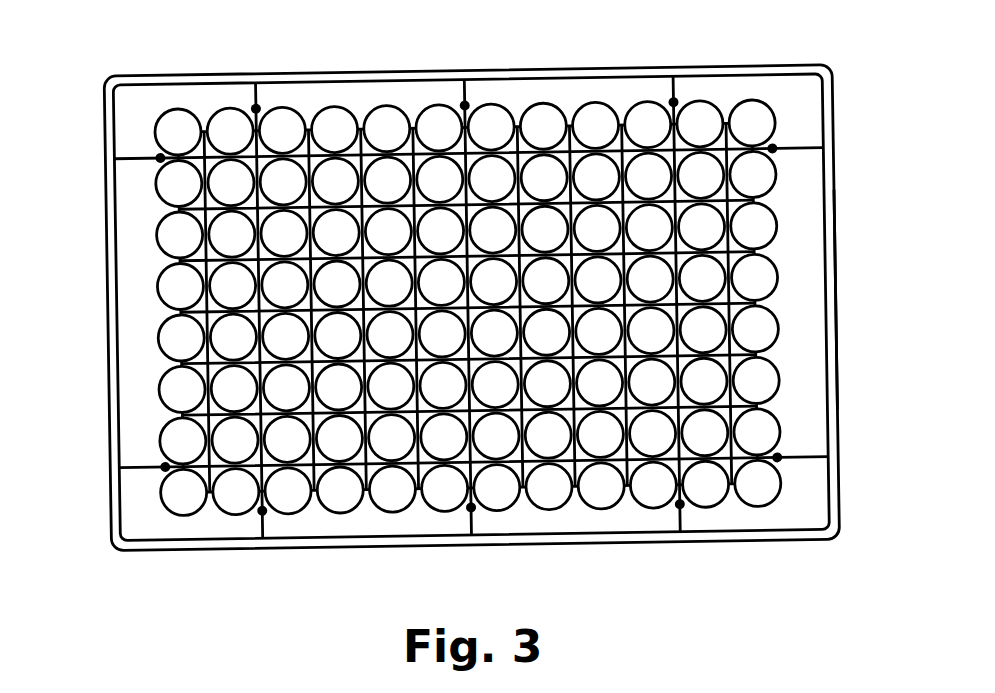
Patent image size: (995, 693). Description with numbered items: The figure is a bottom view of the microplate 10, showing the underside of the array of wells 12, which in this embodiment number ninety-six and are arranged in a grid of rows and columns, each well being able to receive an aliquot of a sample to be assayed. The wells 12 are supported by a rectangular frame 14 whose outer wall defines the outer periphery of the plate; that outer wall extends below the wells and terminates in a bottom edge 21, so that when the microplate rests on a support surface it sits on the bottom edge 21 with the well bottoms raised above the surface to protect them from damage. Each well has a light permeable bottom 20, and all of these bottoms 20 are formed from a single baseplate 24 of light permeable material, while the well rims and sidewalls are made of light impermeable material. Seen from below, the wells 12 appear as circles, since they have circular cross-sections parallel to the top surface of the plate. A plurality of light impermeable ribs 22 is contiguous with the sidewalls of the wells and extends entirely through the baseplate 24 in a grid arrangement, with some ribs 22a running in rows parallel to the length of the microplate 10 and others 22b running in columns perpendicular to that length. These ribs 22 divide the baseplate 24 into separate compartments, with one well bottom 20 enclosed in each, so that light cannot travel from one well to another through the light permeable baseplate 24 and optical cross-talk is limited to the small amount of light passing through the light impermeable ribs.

The microplate 10 is at (104, 222).
The wells 12 is at (647, 497).
The frame 14 is at (686, 68).
The bottom 20 is at (762, 222).
The bottom edge 21 is at (828, 313).
The ribs 22 is at (731, 139).
The ribs extending in rows 22a is at (180, 415).
The ribs extending in columns 22b is at (412, 128).
The baseplate 24 is at (528, 107).